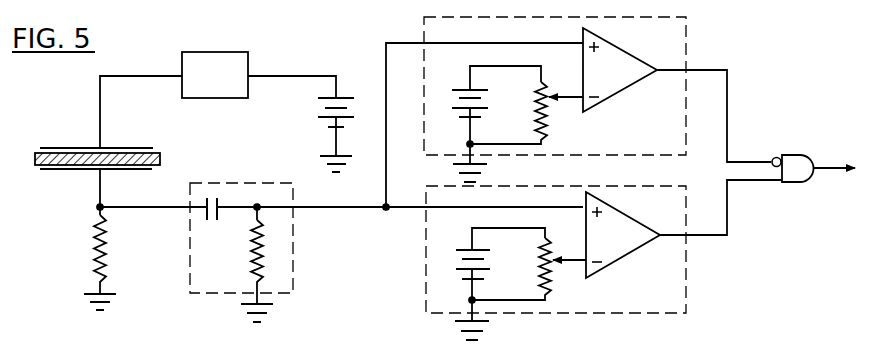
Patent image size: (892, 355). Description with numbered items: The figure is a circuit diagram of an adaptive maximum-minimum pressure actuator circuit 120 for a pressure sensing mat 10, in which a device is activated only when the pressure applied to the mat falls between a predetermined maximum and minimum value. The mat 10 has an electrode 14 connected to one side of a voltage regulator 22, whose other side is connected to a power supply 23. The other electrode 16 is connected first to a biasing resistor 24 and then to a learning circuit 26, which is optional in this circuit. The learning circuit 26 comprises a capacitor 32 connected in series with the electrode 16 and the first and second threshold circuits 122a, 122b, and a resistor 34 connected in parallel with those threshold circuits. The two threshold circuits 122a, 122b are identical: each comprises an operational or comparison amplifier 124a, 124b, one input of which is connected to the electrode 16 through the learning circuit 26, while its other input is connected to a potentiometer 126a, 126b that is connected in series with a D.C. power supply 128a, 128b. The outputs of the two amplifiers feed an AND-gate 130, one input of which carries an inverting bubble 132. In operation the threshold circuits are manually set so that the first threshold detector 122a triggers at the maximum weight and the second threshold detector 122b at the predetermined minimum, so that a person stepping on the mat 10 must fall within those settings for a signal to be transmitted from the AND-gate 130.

The mat 10 is at (127, 155).
The electrode 14 is at (131, 147).
The electrode 16 is at (125, 170).
The voltage regulator 22 is at (228, 52).
The power supply 23 is at (318, 116).
The biasing resistor 24 is at (110, 258).
The learning circuit 26 is at (264, 252).
The capacitor 32 is at (222, 215).
The resistor 34 is at (252, 263).
The adaptive maximum-minimum pressure actuator circuit 120 is at (769, 83).
The first threshold detector circuit 122a is at (686, 33).
The second threshold detector circuit 122b is at (686, 284).
The operational or comparison amplifier 124a is at (614, 97).
The operational or comparison amplifier 124b is at (616, 265).
The potentiometer 126a is at (548, 123).
The potentiometer 126b is at (549, 290).
The D.C. power supply 128a is at (489, 78).
The D.C. power supply 128b is at (489, 240).
The AND-gate 130 is at (813, 166).
The inverting input 132 is at (776, 157).